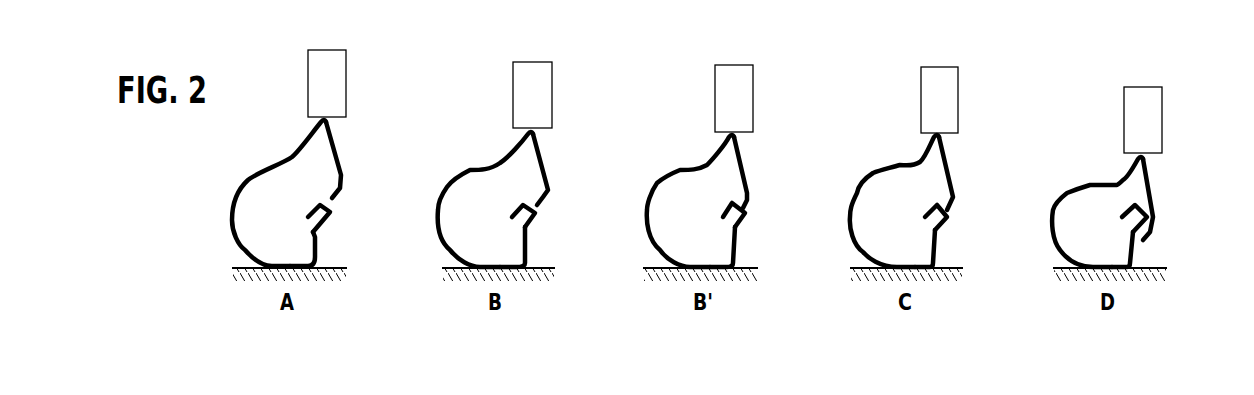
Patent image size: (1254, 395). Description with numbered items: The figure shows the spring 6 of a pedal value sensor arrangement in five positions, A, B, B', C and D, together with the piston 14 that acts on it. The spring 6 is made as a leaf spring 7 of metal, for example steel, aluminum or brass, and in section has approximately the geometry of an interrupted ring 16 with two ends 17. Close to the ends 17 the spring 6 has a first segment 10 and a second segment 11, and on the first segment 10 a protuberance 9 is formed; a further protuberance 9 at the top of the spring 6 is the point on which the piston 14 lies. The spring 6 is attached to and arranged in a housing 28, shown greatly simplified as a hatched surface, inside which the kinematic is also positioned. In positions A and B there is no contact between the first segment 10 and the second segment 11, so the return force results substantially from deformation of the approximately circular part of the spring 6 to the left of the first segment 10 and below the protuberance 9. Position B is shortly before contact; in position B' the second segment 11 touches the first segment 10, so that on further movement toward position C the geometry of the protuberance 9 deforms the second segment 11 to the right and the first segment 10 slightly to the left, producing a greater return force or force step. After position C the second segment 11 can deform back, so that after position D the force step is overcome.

The spring 6 is at (703, 224).
The leaf spring 7 is at (703, 224).
The interrupted ring 16 is at (703, 224).
The protuberance 9 is at (318, 126).
The first segment 10 is at (331, 207).
The second segment 11 is at (336, 185).
The ends 17 is at (693, 196).
The piston 14 is at (333, 87).
The housing 28 is at (323, 273).